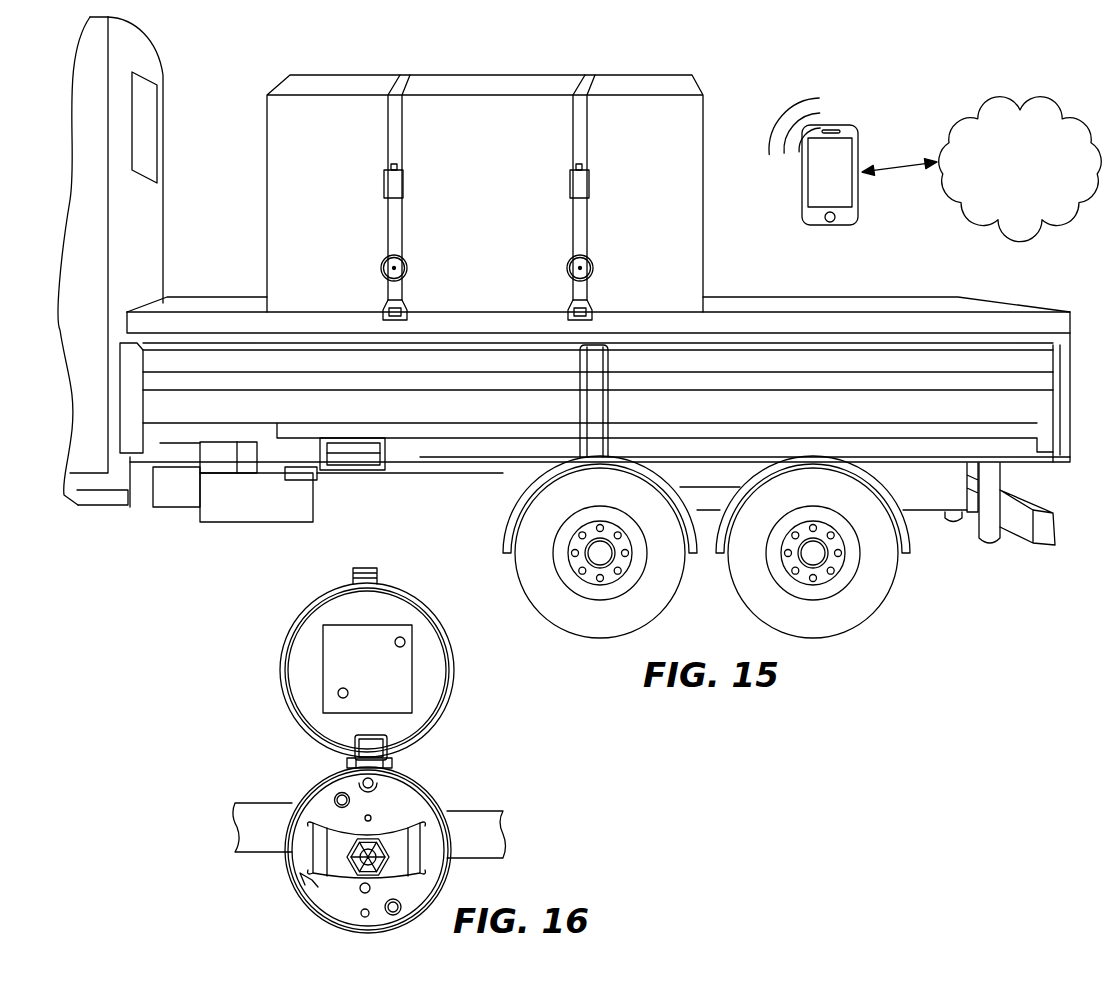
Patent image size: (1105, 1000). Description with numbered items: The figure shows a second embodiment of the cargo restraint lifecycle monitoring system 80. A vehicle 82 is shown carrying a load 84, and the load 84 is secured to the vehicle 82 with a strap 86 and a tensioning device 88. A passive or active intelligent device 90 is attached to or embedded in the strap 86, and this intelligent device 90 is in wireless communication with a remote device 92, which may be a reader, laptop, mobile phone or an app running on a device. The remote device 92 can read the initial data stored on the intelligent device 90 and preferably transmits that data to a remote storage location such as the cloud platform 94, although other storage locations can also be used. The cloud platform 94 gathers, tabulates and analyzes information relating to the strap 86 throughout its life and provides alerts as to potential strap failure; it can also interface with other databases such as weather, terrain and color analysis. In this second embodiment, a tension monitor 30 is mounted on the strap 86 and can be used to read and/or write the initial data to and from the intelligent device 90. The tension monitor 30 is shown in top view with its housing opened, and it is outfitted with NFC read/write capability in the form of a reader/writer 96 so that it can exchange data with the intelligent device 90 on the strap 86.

In FIG. 15, the tension monitor 30 is at (567, 266).
In FIG. 16, the tension monitor 30 is at (450, 662).
In FIG. 15, the cargo restraint lifecycle monitoring system 80 is at (818, 54).
In FIG. 15, the vehicle 82 is at (930, 407).
In FIG. 15, the load 84 is at (618, 85).
In FIG. 15, the strap 86 is at (574, 78).
In FIG. 16, the strap 86 is at (275, 820).
In FIG. 15, the tensioning device 88 is at (594, 308).
In FIG. 15, the intelligent device 90 is at (592, 190).
In FIG. 16, the intelligent device 90 is at (373, 847).
In FIG. 15, the remote device 92 is at (845, 218).
In FIG. 15, the cloud platform 94 is at (1028, 222).
In FIG. 16, the reader/writer 96 is at (343, 658).